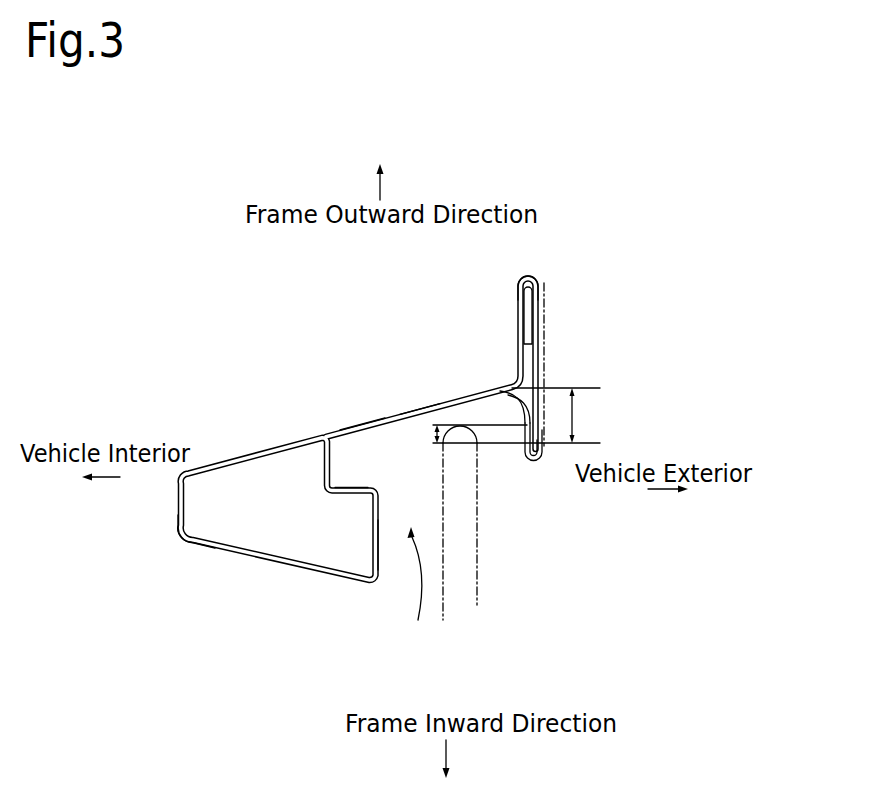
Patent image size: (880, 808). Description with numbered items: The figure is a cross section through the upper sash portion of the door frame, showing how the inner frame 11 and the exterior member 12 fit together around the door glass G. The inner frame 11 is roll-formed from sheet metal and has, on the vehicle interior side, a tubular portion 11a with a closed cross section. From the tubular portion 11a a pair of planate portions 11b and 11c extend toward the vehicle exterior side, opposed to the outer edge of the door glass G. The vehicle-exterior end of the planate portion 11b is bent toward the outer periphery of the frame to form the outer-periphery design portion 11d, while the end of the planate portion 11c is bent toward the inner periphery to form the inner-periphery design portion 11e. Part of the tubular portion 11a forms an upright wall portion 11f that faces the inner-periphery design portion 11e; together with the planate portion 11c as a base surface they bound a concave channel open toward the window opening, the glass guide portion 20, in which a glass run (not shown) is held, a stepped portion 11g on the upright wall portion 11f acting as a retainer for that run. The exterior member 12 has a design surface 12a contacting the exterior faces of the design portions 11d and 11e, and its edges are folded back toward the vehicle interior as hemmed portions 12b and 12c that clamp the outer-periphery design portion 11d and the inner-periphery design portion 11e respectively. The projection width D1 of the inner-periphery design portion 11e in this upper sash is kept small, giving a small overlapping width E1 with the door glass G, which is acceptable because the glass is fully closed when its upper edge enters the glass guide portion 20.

The inner frame 11 is at (281, 446).
The tubular portion 11a is at (203, 545).
The planate portion 11b is at (368, 423).
The planate portion 11c is at (418, 410).
The outer-periphery design portion 11d is at (537, 321).
The inner-periphery design portion 11e is at (530, 418).
The upright wall portion 11f is at (377, 535).
The stepped portion 11g is at (355, 487).
The exterior member 12 is at (549, 384).
The design surface 12a is at (546, 358).
The hemmed portion 12b is at (518, 318).
The hemmed portion 12c is at (520, 470).
The glass guide portion 20 is at (412, 591).
The door glass G is at (478, 541).
The width of the inner-periphery design portion in the upper sash portion D1 is at (520, 415).
The overlapping width E1 is at (465, 438).